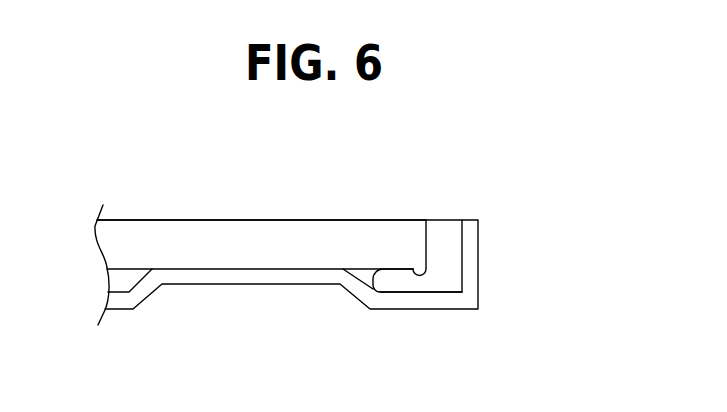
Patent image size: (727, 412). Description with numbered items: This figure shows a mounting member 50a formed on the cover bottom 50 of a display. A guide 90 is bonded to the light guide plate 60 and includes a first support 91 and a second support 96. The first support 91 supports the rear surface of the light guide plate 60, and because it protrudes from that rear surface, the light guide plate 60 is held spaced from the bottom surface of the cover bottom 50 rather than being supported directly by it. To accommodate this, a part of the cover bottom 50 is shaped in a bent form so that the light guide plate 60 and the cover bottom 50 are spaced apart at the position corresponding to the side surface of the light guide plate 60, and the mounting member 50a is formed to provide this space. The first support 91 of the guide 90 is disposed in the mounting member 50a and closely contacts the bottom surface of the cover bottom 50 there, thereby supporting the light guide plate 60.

The cover bottom 50 is at (283, 277).
The mounting member 50a is at (432, 292).
The light guide plate 60 is at (168, 232).
The guide 90 is at (446, 220).
The first support 91 is at (393, 288).
The second support 96 is at (457, 267).